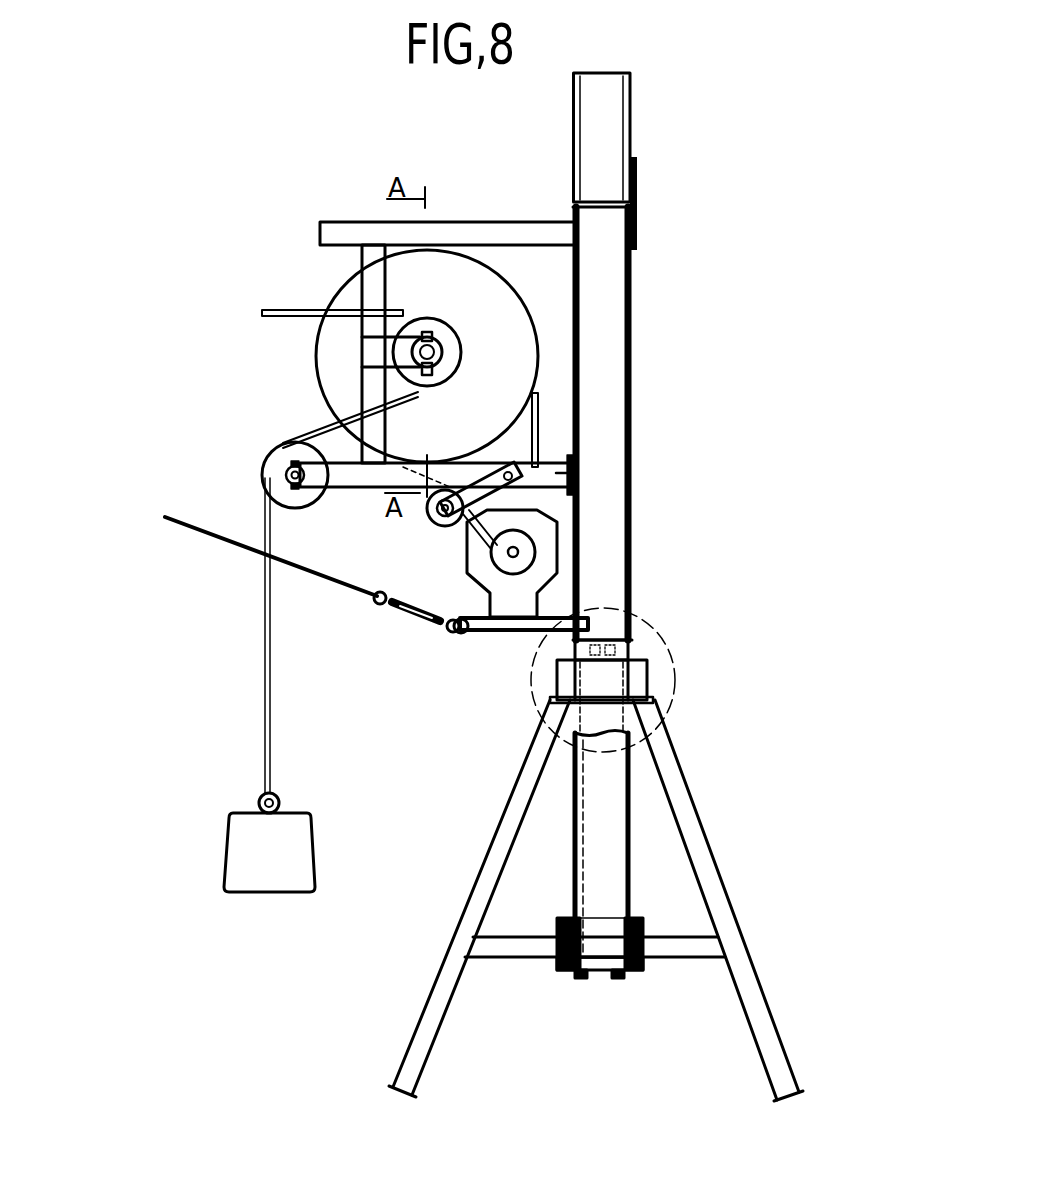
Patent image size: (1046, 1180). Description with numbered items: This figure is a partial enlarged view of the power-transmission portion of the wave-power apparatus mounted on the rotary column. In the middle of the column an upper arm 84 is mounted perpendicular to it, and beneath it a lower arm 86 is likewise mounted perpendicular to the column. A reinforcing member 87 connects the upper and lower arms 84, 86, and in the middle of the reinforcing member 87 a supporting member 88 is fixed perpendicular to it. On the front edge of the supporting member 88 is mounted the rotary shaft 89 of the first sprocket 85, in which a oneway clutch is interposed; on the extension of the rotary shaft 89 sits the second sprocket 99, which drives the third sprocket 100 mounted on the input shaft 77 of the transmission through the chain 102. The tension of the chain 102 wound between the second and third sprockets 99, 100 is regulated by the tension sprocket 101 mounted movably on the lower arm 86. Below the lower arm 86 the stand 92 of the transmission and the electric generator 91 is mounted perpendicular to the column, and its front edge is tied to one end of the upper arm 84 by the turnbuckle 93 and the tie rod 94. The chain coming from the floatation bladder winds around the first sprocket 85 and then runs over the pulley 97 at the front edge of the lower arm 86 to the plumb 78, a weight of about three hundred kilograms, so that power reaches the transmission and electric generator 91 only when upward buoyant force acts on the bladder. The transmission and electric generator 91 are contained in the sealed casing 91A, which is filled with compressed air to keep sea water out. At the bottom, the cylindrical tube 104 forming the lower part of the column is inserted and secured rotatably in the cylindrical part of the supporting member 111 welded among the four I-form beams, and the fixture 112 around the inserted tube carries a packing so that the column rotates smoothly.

The upper arm 84 is at (470, 232).
The second sprocket 99 is at (513, 302).
The first sprocket 85 is at (452, 344).
The rotary shaft 89 is at (435, 358).
The supporting member 88 is at (367, 352).
The reinforcing member 87 is at (367, 380).
The chain 102 is at (538, 412).
The pulley 97 is at (267, 463).
The tension sprocket 101 is at (438, 526).
The lower arm 86 is at (558, 473).
The casing 91A is at (557, 530).
The electric generator 91 is at (477, 567).
The third sprocket 100 is at (522, 565).
The input shaft 77 is at (513, 552).
The stand 92 is at (470, 632).
The turnbuckle 93 is at (413, 622).
The tie rod 94 is at (310, 575).
The plumb 78 is at (300, 838).
The cylindrical tube 104 is at (620, 716).
The supporting member 111 is at (700, 935).
The fixture 112 is at (640, 917).